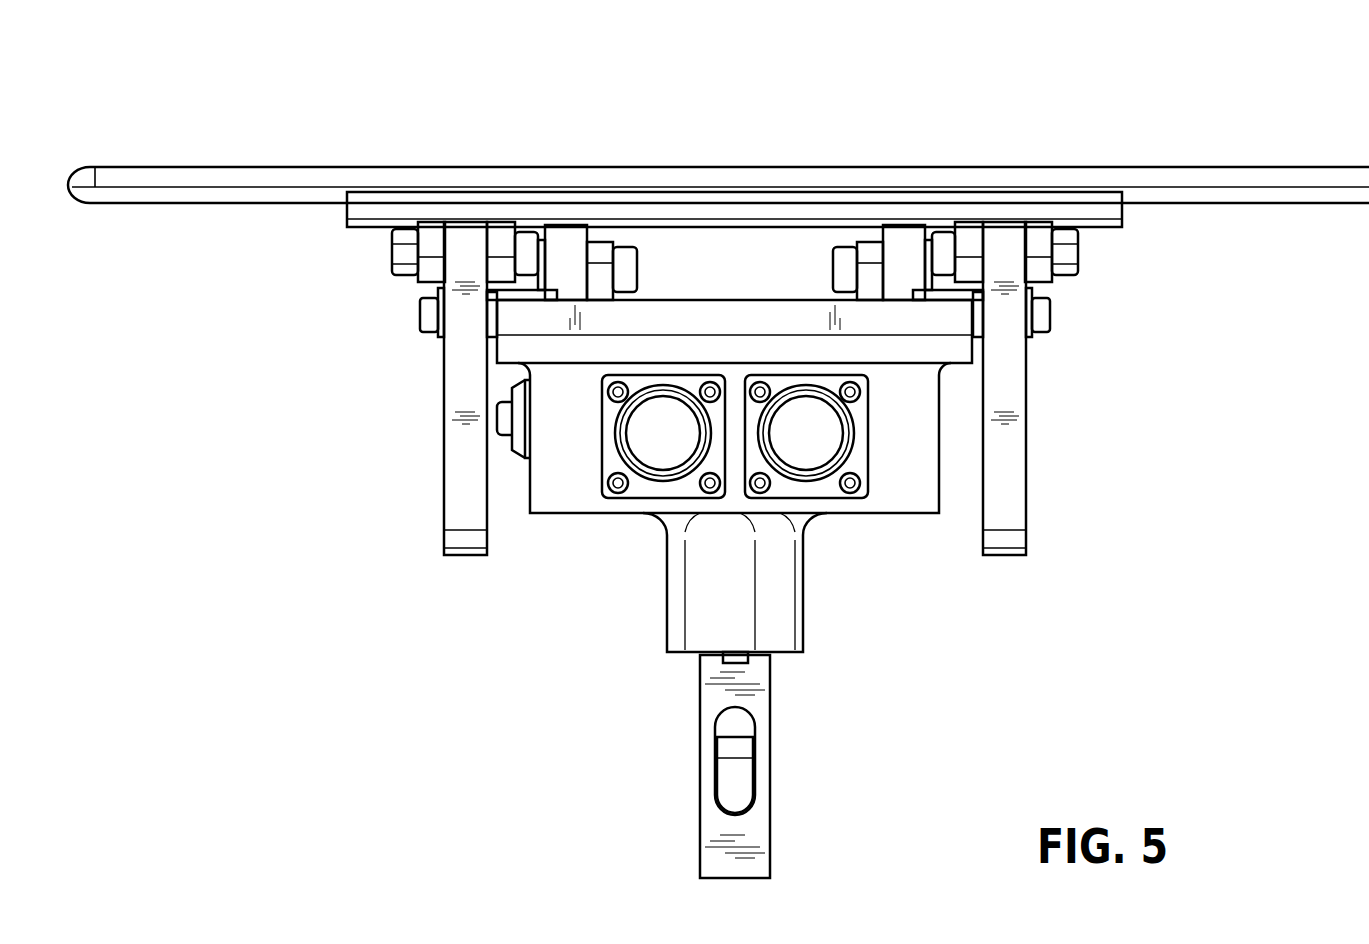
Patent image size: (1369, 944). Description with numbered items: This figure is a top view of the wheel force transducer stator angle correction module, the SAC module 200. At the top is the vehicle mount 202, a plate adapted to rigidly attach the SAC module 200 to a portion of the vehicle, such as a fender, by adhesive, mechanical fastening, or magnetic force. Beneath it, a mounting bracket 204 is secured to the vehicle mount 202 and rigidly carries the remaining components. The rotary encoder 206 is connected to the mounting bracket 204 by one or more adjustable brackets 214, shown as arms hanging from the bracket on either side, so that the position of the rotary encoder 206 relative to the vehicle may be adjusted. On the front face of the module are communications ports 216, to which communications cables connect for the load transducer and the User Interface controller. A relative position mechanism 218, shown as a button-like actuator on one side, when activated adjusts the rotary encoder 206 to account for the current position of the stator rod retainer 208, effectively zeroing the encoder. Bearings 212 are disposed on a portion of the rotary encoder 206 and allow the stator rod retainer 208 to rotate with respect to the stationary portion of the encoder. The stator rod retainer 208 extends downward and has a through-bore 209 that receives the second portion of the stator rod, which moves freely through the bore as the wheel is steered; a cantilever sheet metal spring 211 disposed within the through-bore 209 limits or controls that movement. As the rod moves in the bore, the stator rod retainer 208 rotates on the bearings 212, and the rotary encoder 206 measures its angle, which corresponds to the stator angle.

The SAC module 200 is at (258, 117).
The vehicle mount 202 is at (912, 178).
The mounting bracket 204 is at (345, 206).
The rotary encoder 206 is at (663, 317).
The stator rod retainer 208 is at (704, 813).
The through-bore 209 is at (738, 725).
The cantilever sheet metal spring 211 is at (742, 775).
The bearings 212 is at (676, 595).
The adjustable brackets 214 is at (450, 512).
The communications ports 216 is at (661, 459).
The relative position mechanism 218 is at (497, 421).